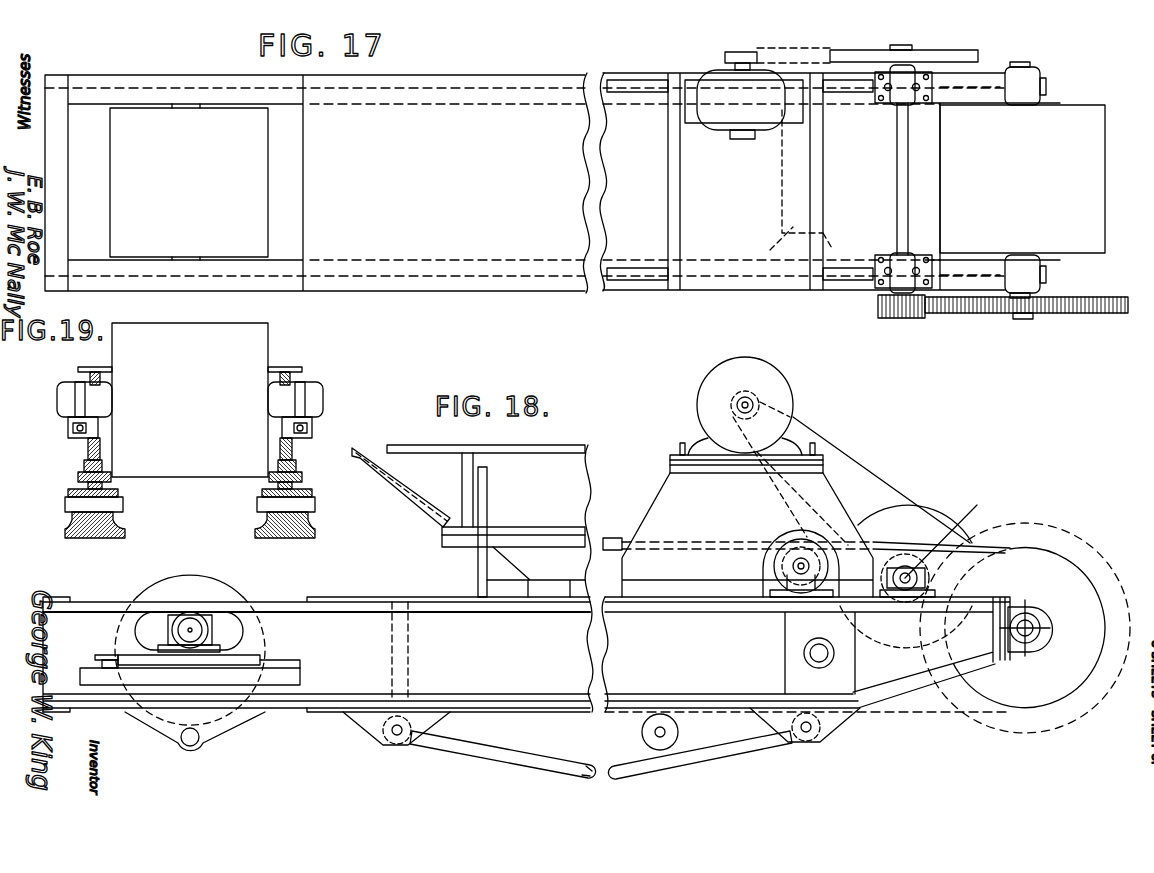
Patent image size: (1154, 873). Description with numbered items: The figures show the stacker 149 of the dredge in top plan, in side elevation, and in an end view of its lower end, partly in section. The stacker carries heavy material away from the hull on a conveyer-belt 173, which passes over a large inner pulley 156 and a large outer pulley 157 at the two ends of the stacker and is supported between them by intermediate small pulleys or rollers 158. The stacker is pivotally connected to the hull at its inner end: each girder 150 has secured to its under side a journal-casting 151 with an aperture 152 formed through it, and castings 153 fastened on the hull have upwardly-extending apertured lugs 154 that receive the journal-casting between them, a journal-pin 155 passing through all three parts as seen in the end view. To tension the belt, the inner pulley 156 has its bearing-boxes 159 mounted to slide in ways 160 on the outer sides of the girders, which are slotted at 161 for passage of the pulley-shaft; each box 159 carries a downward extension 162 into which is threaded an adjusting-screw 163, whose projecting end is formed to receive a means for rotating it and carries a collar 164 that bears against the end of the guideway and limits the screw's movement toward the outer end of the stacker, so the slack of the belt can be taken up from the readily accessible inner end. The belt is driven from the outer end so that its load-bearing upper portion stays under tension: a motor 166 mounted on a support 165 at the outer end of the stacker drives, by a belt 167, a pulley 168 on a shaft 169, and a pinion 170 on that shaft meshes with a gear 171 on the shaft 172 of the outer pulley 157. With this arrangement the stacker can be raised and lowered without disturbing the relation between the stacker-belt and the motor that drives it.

In FIG. 17, the stacker 149 is at (528, 292).
In FIG. 18, the stacker 149 is at (500, 689).
In FIG. 19, the girder 150 is at (78, 369).
In FIG. 18, the girder 150 is at (313, 710).
In FIG. 19, the journal-casting 151 is at (78, 480).
In FIG. 18, the aperture 152 is at (187, 747).
In FIG. 19, the casting 153 is at (90, 538).
In FIG. 19, the lug 154 is at (68, 493).
In FIG. 19, the journal-pin 155 is at (123, 505).
In FIG. 17, the inner pulley 156 is at (110, 165).
In FIG. 18, the inner pulley 156 is at (243, 572).
In FIG. 17, the outer pulley 157 is at (1065, 105).
In FIG. 18, the outer pulley 157 is at (1075, 565).
In FIG. 18, the small pulley 158 is at (788, 541).
In FIG. 19, the bearing-box 159 is at (57, 395).
In FIG. 18, the bearing-box 159 is at (212, 631).
In FIG. 19, the way 160 is at (68, 433).
In FIG. 18, the way 160 is at (263, 657).
In FIG. 18, the slot 161 is at (145, 628).
In FIG. 19, the downward extension 162 is at (312, 425).
In FIG. 19, the adjusting-screw 163 is at (68, 425).
In FIG. 18, the adjusting-screw 163 is at (102, 661).
In FIG. 18, the collar 164 is at (113, 655).
In FIG. 17, the support 165 is at (712, 285).
In FIG. 18, the support 165 is at (659, 493).
In FIG. 17, the motor 166 is at (718, 133).
In FIG. 18, the motor 166 is at (703, 383).
In FIG. 17, the belt 167 is at (795, 51).
In FIG. 18, the belt 167 is at (843, 453).
In FIG. 17, the pulley 168 is at (945, 52).
In FIG. 18, the pulley 168 is at (867, 521).
In FIG. 17, the shaft 169 is at (897, 205).
In FIG. 18, the shaft 169 is at (943, 539).
In FIG. 17, the pinion 170 is at (880, 318).
In FIG. 18, the pinion 170 is at (913, 548).
In FIG. 17, the gear 171 is at (980, 313).
In FIG. 18, the gear 171 is at (1055, 529).
In FIG. 17, the shaft 172 is at (1022, 320).
In FIG. 18, the shaft 172 is at (1043, 632).
In FIG. 18, the conveyer-belt 173 is at (612, 539).